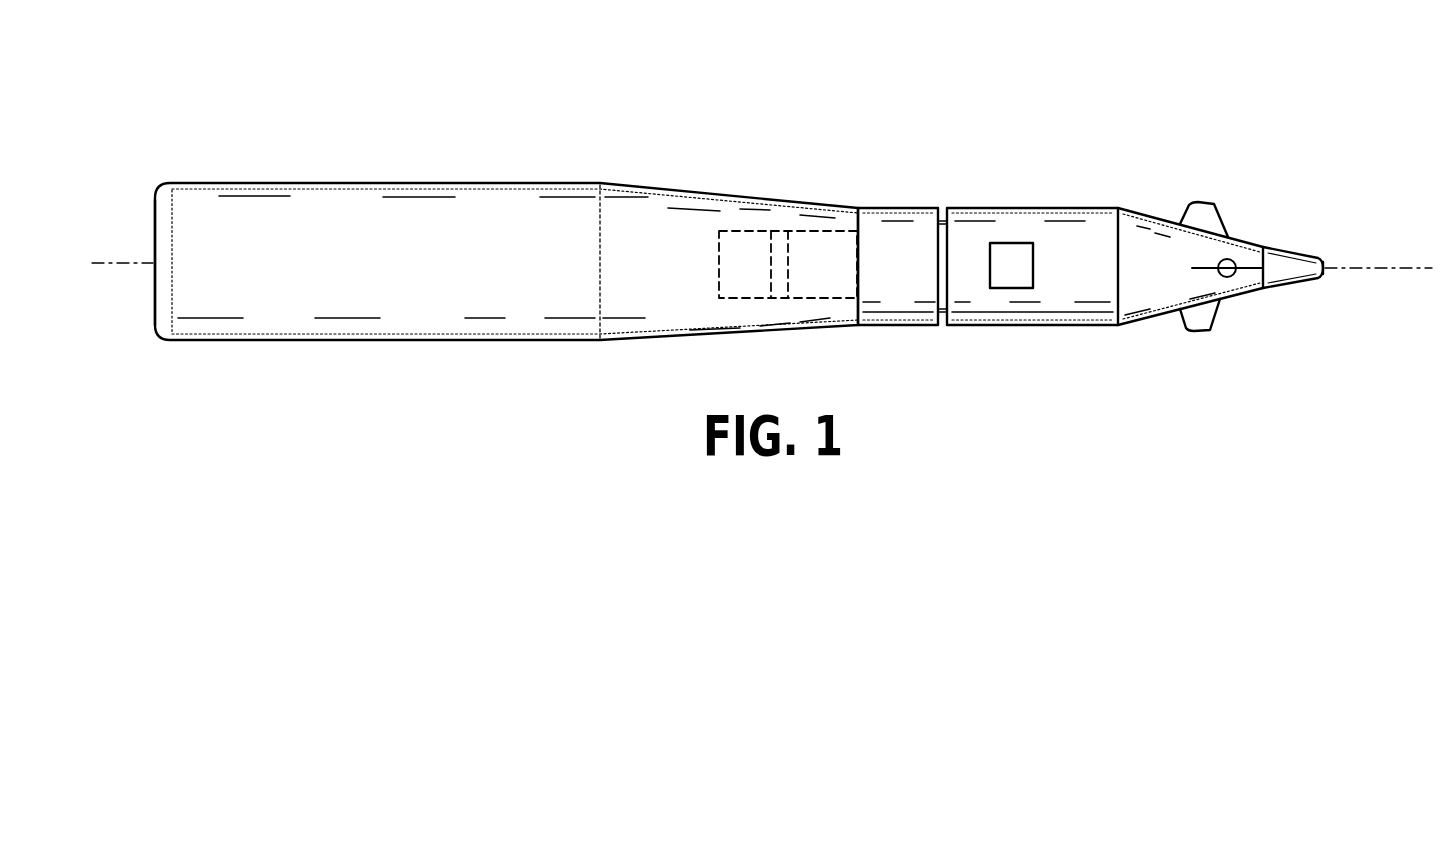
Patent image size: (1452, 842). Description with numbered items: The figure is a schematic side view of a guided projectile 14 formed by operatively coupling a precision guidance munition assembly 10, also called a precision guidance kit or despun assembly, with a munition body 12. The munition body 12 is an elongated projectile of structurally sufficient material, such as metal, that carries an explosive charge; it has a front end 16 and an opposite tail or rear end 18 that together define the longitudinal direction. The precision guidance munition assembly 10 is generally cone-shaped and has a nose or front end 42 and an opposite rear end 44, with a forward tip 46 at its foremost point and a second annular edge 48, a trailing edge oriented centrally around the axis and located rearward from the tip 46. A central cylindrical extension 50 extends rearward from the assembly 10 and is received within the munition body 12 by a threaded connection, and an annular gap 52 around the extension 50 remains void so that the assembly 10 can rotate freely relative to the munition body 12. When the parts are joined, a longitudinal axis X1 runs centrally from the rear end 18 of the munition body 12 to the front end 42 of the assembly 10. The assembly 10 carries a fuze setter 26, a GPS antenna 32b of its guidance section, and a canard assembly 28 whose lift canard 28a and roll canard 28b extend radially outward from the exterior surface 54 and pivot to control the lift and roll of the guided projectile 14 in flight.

The precision guidance munition assembly 10 is at (1095, 205).
The munition body 12 is at (545, 183).
The guided projectile 14 is at (593, 92).
The front end 16 is at (840, 192).
The rear end 18 is at (142, 237).
The fuze setter 26 is at (1295, 245).
The canard assembly 28 is at (1185, 282).
The lift canard 28a is at (1246, 272).
The roll canard 28b is at (1200, 206).
The GPS antenna 32b is at (1012, 207).
The nose 42 is at (1337, 253).
The rear end 44 is at (710, 247).
The forward tip 46 is at (1330, 277).
The second annular edge 48 is at (938, 278).
The central cylindrical extension 50 is at (807, 240).
The gap 52 is at (944, 285).
The exterior surface 54 is at (1155, 222).
The longitudinal axis X1 is at (100, 265).